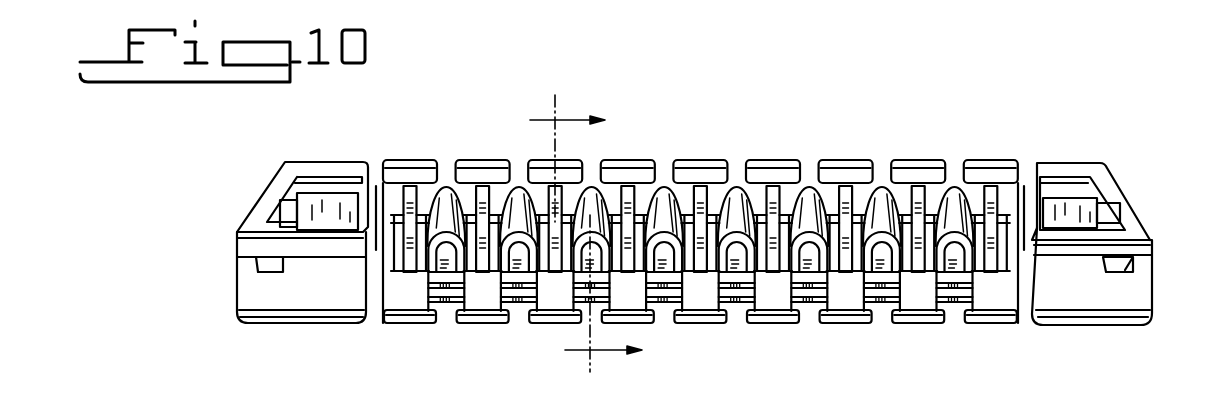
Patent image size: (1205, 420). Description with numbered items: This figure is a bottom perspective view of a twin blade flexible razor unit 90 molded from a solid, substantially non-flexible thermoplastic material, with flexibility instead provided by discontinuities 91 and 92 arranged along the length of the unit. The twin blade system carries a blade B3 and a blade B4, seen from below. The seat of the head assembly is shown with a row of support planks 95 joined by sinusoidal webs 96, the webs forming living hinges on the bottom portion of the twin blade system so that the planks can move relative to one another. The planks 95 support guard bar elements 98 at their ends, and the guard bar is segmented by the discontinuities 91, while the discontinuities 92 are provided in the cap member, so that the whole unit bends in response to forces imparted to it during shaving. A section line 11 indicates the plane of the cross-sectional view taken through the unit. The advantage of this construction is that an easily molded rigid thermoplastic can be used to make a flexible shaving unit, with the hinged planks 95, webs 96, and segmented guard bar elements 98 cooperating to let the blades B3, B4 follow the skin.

The connector assembly housing 90 is at (1040, 128).
The guard bar elements 98 is at (486, 160).
The discontinuities 91 is at (737, 180).
The sinusoidal webs 96 is at (812, 197).
The support planks 95 is at (783, 268).
The discontinuities 92 is at (880, 312).
The blade B3 is at (450, 303).
The blade B4 is at (523, 303).
The section line 11- 11 is at (586, 237).